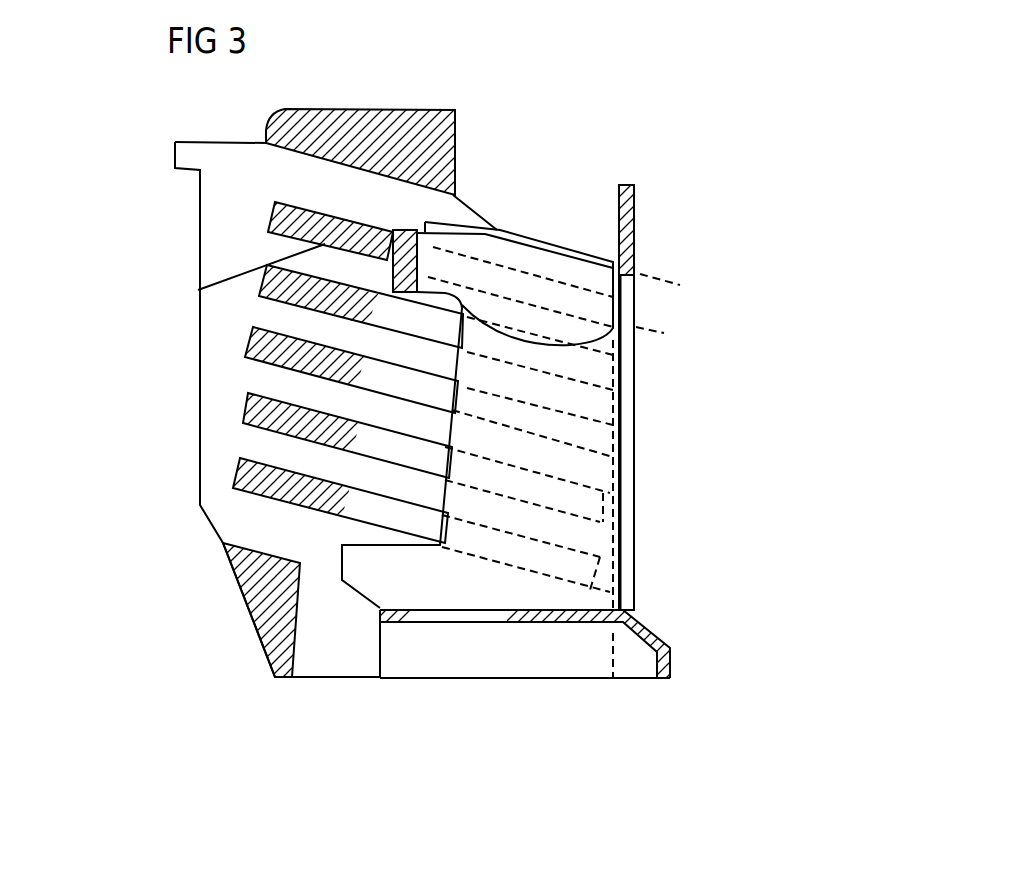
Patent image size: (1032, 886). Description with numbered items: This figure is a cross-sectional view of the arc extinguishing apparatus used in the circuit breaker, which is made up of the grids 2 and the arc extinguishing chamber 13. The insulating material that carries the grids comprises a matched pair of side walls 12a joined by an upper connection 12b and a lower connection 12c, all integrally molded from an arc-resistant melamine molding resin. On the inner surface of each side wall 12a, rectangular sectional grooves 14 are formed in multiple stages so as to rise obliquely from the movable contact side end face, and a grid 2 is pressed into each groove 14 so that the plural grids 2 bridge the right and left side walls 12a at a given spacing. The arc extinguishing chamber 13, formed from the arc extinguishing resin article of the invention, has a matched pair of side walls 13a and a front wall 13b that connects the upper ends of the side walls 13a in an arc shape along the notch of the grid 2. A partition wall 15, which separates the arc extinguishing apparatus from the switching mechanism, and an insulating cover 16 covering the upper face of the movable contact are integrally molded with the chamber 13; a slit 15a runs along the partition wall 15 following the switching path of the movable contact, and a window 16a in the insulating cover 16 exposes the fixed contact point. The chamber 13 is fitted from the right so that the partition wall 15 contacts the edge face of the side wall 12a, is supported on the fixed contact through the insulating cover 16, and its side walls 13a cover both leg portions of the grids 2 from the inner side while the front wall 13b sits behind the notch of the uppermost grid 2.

The grid 2 is at (277, 303).
The side wall 12a is at (238, 373).
The connection 12b is at (440, 110).
The connection 12c is at (280, 602).
The arc extinguishing chamber 13 is at (650, 466).
The side wall 13a is at (583, 417).
The front wall 13b is at (628, 330).
The groove 14 is at (273, 210).
The partition wall 15 is at (725, 391).
The slit 15a is at (627, 285).
The insulating cover 16 is at (604, 640).
The window 16a is at (463, 617).